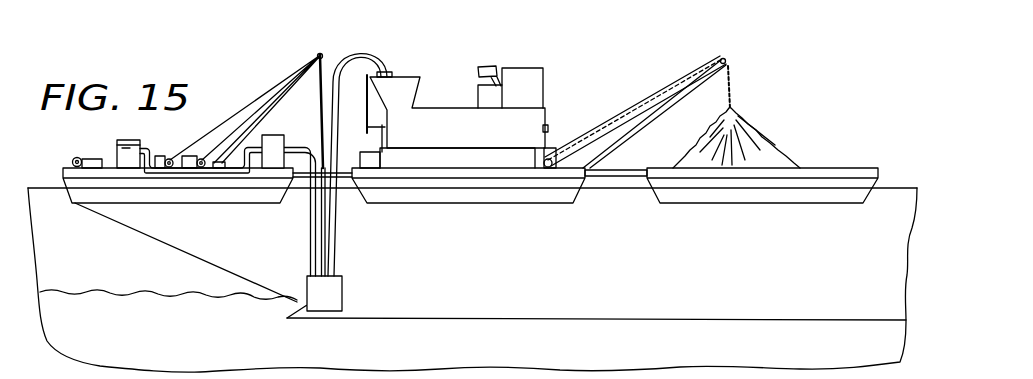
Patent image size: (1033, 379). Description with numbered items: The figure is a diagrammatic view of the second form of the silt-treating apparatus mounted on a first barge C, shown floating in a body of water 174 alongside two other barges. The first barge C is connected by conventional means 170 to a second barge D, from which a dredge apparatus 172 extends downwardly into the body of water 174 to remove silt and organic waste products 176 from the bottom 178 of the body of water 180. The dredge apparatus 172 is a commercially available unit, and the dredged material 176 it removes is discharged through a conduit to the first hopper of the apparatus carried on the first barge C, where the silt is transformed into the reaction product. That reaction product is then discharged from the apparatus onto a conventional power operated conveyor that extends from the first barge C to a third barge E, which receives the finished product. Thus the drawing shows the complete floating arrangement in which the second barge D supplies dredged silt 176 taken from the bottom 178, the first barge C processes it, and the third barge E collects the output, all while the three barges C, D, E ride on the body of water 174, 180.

The conventional means 170 is at (340, 205).
The dredge apparatus 172 is at (316, 256).
The body of water 174 is at (440, 275).
The silt and organic waste products 176 is at (283, 303).
The bottom 178 is at (438, 317).
The body of water 180 is at (523, 250).
The first barge C is at (464, 191).
The second barge D is at (236, 190).
The third barge E is at (718, 192).